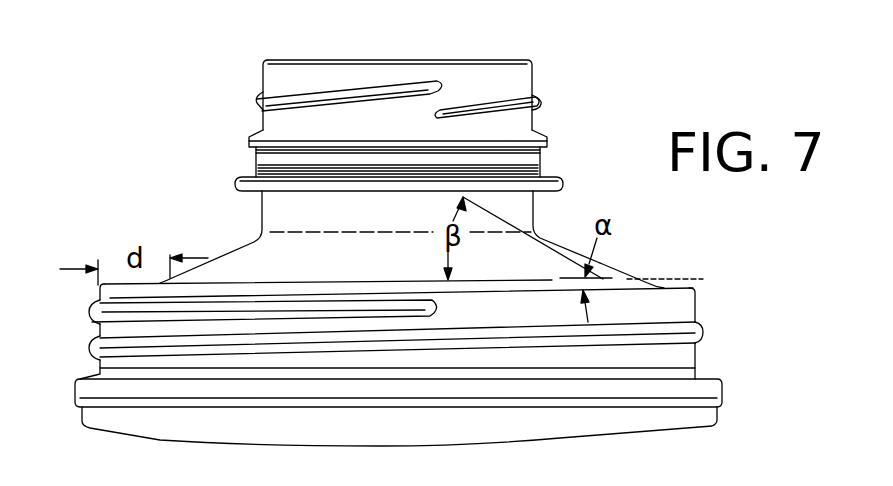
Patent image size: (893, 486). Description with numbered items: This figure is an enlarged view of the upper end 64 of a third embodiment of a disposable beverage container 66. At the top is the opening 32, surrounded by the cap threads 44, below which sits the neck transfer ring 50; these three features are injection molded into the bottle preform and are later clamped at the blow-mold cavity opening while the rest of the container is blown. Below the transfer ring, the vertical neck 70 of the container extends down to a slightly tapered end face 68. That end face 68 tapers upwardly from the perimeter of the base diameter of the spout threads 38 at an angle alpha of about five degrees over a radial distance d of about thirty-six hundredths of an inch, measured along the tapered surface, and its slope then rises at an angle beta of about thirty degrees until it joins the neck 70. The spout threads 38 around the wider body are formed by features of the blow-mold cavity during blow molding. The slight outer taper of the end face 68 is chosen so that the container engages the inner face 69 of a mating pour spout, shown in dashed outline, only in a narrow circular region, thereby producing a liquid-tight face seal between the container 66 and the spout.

The opening 32 is at (475, 55).
The cap threads 44 is at (535, 101).
The neck transfer ring 50 is at (247, 181).
The upper end 64 is at (100, 225).
The neck 70 is at (535, 208).
The end face 68 is at (653, 284).
The inner face 69 is at (703, 280).
The spout threads 38 is at (705, 338).
The disposable beverage container 66 is at (722, 383).